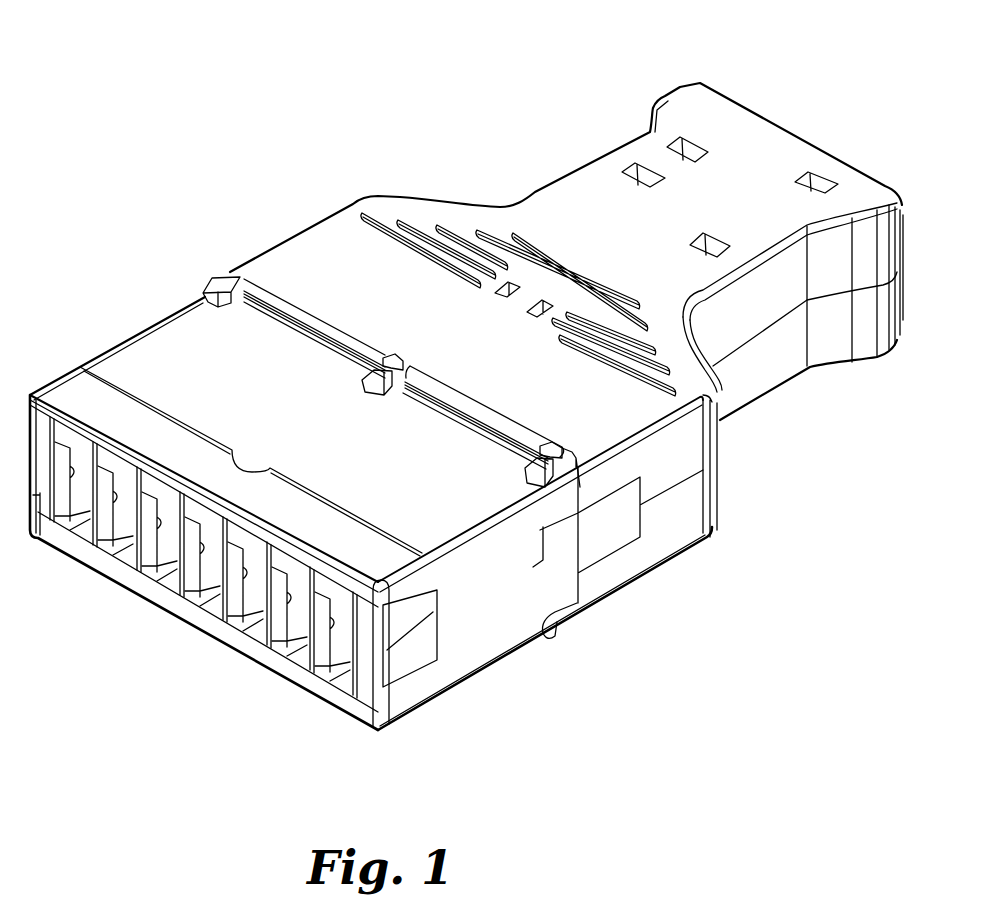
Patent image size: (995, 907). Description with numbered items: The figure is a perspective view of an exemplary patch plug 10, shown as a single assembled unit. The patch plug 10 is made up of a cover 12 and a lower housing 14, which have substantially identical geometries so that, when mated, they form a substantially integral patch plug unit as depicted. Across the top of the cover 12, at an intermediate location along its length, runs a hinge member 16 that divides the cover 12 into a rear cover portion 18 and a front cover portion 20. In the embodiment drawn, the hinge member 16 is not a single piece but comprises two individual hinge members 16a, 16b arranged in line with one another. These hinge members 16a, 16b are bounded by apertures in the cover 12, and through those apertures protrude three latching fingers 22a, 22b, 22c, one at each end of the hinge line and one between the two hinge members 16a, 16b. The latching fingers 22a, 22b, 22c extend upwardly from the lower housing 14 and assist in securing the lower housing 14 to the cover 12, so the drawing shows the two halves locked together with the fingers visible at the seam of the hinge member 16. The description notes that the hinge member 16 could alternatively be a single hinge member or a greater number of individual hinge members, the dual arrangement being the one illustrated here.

The patch plug 10 is at (304, 205).
The cover 12 is at (755, 168).
The lower housing 14 is at (760, 383).
The hinge member 16 is at (390, 374).
The hinge member 16a is at (287, 307).
The hinge member 16b is at (455, 398).
The rear cover portion 18 is at (662, 233).
The front cover portion 20 is at (400, 501).
The latching finger 22a is at (206, 290).
The latching finger 22b is at (405, 364).
The latching finger 22c is at (535, 475).